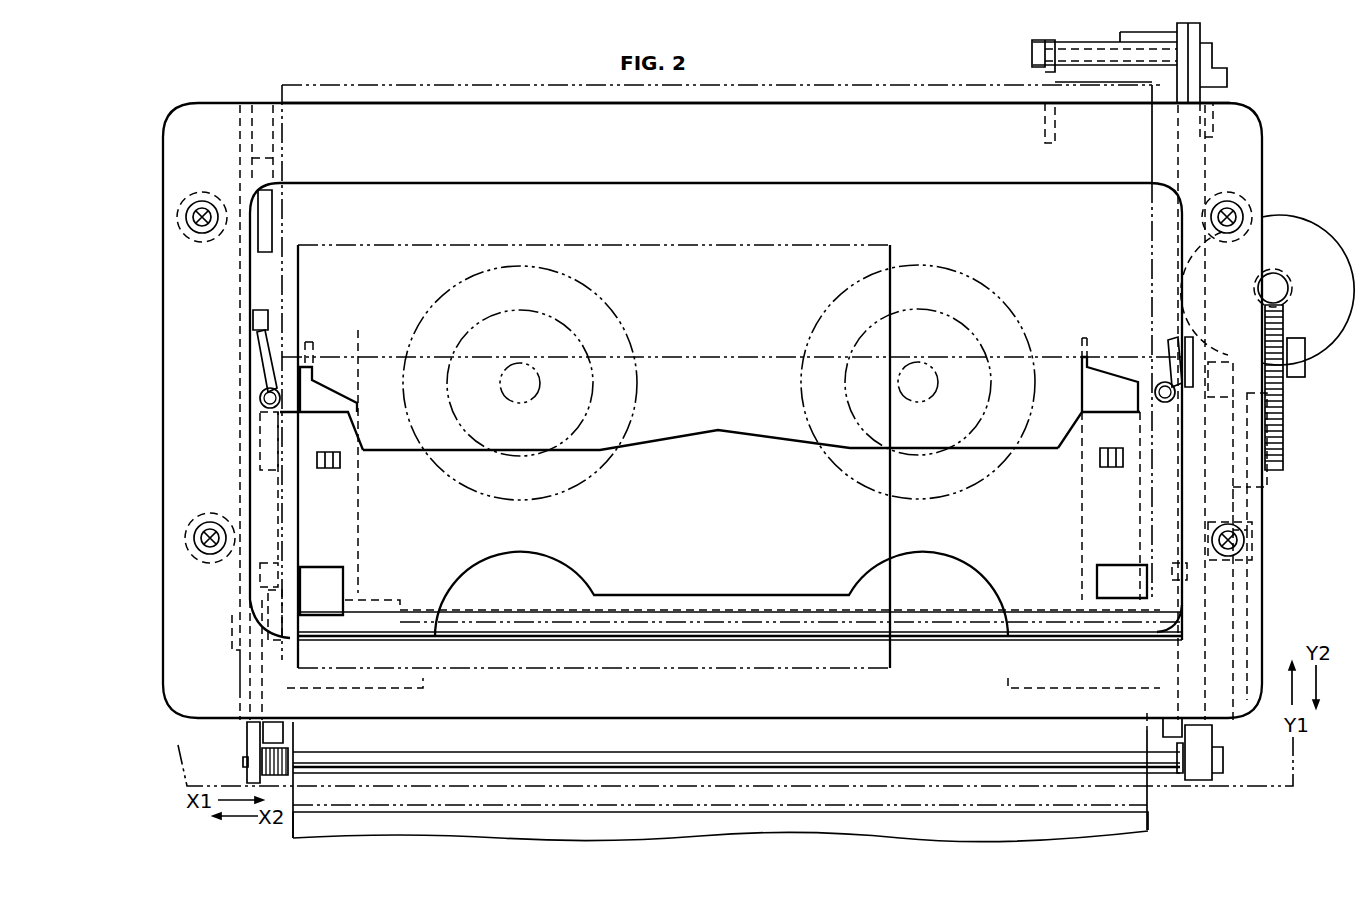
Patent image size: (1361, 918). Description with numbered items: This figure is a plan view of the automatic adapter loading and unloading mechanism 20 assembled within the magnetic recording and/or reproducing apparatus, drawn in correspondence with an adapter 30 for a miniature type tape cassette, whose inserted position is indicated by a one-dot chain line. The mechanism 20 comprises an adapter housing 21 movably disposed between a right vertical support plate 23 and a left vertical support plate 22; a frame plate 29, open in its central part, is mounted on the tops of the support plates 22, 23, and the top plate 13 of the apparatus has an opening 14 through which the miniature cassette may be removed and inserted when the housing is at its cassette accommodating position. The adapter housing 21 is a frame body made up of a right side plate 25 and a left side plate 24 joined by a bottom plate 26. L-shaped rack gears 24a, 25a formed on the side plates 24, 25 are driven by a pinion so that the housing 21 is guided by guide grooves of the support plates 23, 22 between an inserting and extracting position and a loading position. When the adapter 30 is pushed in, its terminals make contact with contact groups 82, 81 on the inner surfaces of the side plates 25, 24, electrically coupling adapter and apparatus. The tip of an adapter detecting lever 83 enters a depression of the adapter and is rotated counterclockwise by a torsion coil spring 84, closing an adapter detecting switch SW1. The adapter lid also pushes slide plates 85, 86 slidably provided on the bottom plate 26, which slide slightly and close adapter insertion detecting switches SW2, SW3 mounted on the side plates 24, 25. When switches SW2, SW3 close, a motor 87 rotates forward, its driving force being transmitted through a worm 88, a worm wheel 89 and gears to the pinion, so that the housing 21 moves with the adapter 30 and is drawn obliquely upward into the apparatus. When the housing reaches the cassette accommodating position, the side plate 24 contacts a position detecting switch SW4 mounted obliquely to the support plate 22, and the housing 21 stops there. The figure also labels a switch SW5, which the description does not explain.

The top plate 13 is at (1230, 790).
The opening 14 is at (787, 248).
The loading and unloading mechanism 20 is at (957, 64).
The adapter housing 21 is at (722, 428).
The left vertical support plate 22 is at (242, 283).
The right vertical support plate 23 is at (1200, 164).
The left side plate 24 is at (266, 495).
The L-shaped rack gear 24a is at (300, 747).
The right side plate 25 is at (1160, 500).
The L-shaped rack gear 25a is at (1165, 742).
The bottom plate 26 is at (556, 561).
The frame plate 29 is at (525, 107).
The adapter 30 is at (781, 86).
The contact group 81 is at (256, 604).
The contact group 82 is at (1193, 627).
The adapter detecting lever 83 is at (257, 428).
The torsion coil spring 84 is at (268, 386).
The slide plate 85 is at (342, 380).
The slide plate 86 is at (1115, 378).
The motor 87 is at (1277, 214).
The worm 88 is at (1277, 274).
The worm wheel 89 is at (1284, 445).
The adapter detecting switch SW1 is at (255, 322).
The adapter insertion detecting switch SW2 is at (260, 580).
The adapter insertion detecting switch SW3 is at (1188, 578).
The position detecting switch SW4 is at (268, 170).
The switch 5 (SW7) SW5 is at (1305, 378).